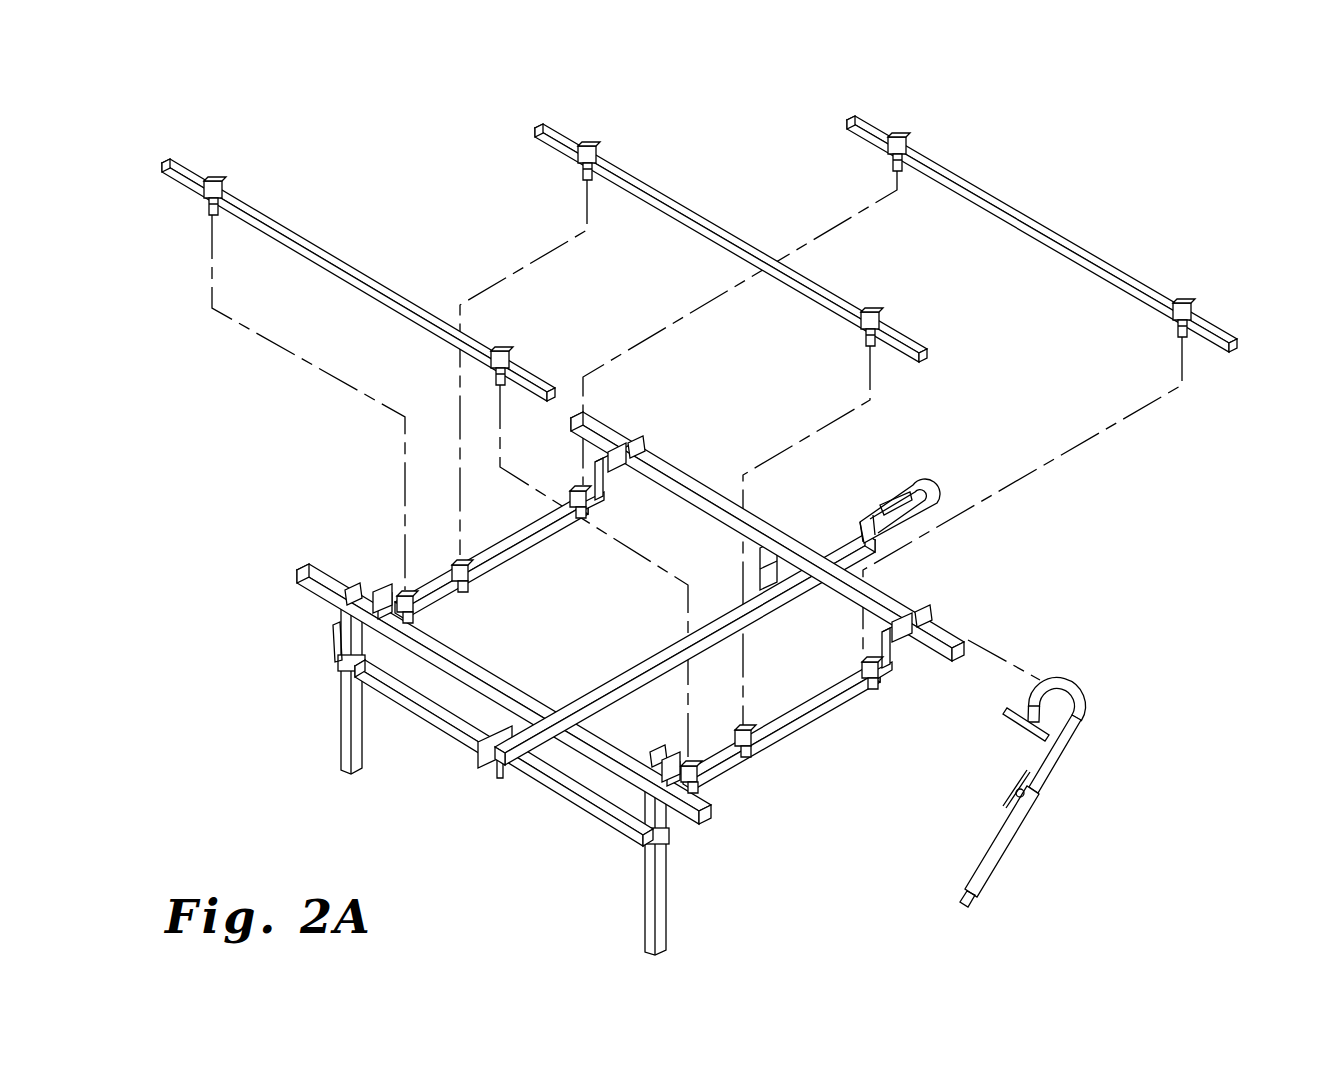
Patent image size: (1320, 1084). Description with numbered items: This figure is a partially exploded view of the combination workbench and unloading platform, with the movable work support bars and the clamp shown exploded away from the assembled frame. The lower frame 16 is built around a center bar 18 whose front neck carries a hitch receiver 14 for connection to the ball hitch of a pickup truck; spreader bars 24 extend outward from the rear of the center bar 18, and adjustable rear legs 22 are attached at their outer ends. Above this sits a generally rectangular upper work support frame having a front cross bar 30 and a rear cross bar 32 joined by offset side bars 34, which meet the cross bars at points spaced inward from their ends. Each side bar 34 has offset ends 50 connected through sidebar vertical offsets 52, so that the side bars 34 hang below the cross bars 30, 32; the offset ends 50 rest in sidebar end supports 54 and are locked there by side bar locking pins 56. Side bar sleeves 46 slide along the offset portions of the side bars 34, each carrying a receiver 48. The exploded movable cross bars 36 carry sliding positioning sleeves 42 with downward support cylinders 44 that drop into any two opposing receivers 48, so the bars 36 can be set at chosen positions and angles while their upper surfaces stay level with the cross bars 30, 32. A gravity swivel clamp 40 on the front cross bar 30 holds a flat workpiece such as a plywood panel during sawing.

The hitch receiver 14 is at (935, 465).
The lower frame 16 is at (489, 770).
The center bar 18 is at (628, 660).
The rear legs 22 is at (345, 722).
The spreader bars 24 is at (430, 722).
The front cross bar 30 is at (700, 478).
The rear cross bar 32 is at (500, 680).
The offset side bars 34 is at (530, 551).
The movable cross bars 36 is at (298, 233).
The gravity swivel clamp 40 is at (1090, 772).
The positioning sleeves 42 is at (218, 190).
The support cylinders 44 is at (209, 212).
The side bar sleeves 46 is at (415, 612).
The receivers 48 is at (414, 592).
The offset ends 50 is at (385, 590).
The sidebar vertical offsets 52 is at (608, 490).
The sidebar end supports 54 is at (352, 592).
The side bar locking pins 56 is at (645, 462).